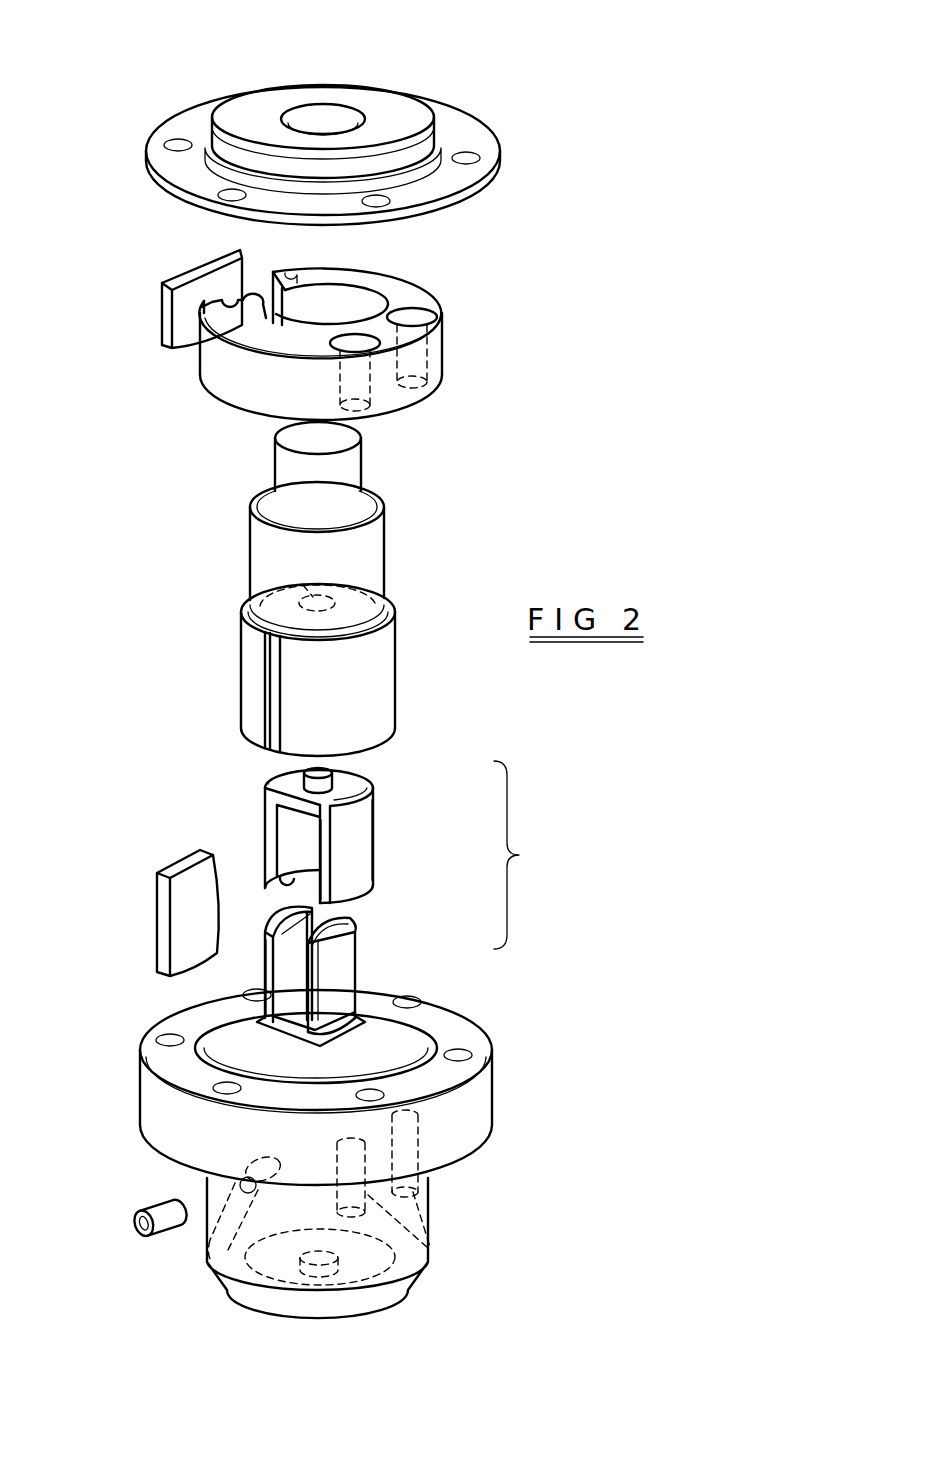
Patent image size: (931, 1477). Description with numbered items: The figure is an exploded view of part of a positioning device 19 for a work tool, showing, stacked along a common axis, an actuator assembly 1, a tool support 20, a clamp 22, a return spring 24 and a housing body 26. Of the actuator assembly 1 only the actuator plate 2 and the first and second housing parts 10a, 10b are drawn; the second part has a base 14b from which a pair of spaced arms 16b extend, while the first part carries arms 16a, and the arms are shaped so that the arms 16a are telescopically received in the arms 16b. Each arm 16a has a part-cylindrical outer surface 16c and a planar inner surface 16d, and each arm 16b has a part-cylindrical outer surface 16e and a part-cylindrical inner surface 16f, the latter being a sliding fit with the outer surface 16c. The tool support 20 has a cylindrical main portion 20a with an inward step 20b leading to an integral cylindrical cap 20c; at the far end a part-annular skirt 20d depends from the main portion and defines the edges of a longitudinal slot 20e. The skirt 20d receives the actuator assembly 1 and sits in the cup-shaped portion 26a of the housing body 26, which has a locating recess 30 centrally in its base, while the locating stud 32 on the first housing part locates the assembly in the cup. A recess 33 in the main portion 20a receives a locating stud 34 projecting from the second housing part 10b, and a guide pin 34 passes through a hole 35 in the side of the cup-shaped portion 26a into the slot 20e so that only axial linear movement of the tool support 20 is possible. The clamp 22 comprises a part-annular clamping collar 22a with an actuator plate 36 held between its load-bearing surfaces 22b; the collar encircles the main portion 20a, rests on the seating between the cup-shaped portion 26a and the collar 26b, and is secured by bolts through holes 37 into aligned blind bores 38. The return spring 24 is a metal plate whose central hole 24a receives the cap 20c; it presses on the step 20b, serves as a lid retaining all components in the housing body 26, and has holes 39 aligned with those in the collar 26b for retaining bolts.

The actuator assembly 1 is at (518, 855).
The actuator plate 2 is at (158, 925).
The first housing part 10a is at (340, 968).
The second housing part 10b is at (266, 998).
The base 14b is at (278, 785).
The arm 16a is at (256, 969).
The arm 16b is at (386, 858).
The part-cylindrical outer surface 16c is at (352, 945).
The planar inner surface 16d is at (290, 916).
The part-cylindrical outer surface 16e is at (362, 898).
The part-cylindrical inner surface 16f is at (272, 876).
The positioning device 19 is at (125, 710).
The tool support 20 is at (333, 589).
The cylindrical main portion 20a is at (366, 540).
The inward step 20b is at (368, 497).
The cylindrical cap 20c is at (284, 466).
The part-annular skirt 20d is at (385, 672).
The longitudinal slot 20e is at (217, 692).
The clamp 22 is at (316, 329).
The clamping collar 22a is at (443, 343).
The load-bearing surface 22b is at (272, 270).
The return spring 24 is at (324, 112).
The hole 24a is at (335, 116).
The housing body 26 is at (366, 1157).
The cup-shaped portion 26a is at (436, 1197).
The collar 26b is at (468, 1033).
The locating recess 30 is at (348, 1266).
The locating stud 32 is at (446, 1012).
The recess 33 is at (303, 592).
The locating stud / guide pin 34 is at (335, 770).
The hole 35 is at (207, 1254).
The actuator plate 36 is at (175, 292).
The holes 37 is at (415, 372).
The blind bores 38 is at (438, 1254).
The aligned holes 39 is at (178, 140).